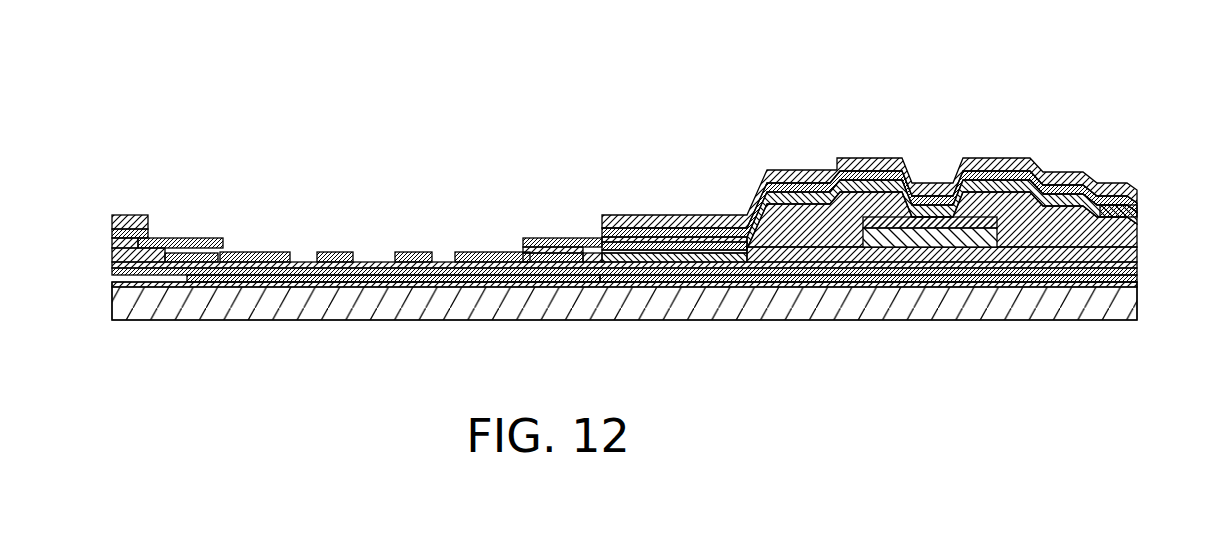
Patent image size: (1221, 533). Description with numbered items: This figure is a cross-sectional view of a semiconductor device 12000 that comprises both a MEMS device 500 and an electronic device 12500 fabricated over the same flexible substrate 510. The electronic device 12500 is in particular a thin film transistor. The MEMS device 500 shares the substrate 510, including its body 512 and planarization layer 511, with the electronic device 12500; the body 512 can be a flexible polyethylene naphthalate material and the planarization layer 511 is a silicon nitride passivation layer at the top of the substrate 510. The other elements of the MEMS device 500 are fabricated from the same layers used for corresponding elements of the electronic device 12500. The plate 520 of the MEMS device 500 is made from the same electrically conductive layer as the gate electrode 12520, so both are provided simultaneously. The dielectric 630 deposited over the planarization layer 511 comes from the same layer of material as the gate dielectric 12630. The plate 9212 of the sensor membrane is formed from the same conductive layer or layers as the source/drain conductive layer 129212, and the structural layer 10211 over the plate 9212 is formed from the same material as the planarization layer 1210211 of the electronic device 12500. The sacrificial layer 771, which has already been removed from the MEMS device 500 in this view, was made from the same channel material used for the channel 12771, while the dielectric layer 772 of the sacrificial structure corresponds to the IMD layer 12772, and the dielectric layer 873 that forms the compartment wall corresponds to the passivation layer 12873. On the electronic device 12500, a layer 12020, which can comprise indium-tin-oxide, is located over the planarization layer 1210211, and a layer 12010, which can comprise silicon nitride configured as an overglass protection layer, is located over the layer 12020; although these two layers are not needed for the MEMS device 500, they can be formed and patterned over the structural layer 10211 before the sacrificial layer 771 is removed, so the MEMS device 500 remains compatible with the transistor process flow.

The MEMS device 500 is at (330, 148).
The electronic device 12500 is at (848, 204).
The structural layer 10211 is at (209, 186).
The plate 9212 is at (383, 210).
The sacrificial layer 771 is at (624, 206).
The dielectric layer 873 is at (103, 205).
The dielectric layer 772 is at (114, 232).
The dielectric 630 is at (599, 267).
The planarization layer 511 is at (626, 307).
The plate 520 is at (393, 330).
The substrate 510 is at (624, 334).
The body 512 is at (624, 339).
The semiconductor device 12000 is at (630, 211).
The layer 12020 is at (815, 167).
The layer 12010 is at (857, 143).
The source/drain conductive layer 129212 is at (902, 165).
The passivation layer 12873 is at (902, 236).
The planarization layer 1210211 is at (1145, 177).
The gate dielectric 12630 is at (936, 300).
The gate electrode 12520 is at (868, 329).
The channel 12771 is at (928, 318).
The IMD layer 12772 is at (930, 298).